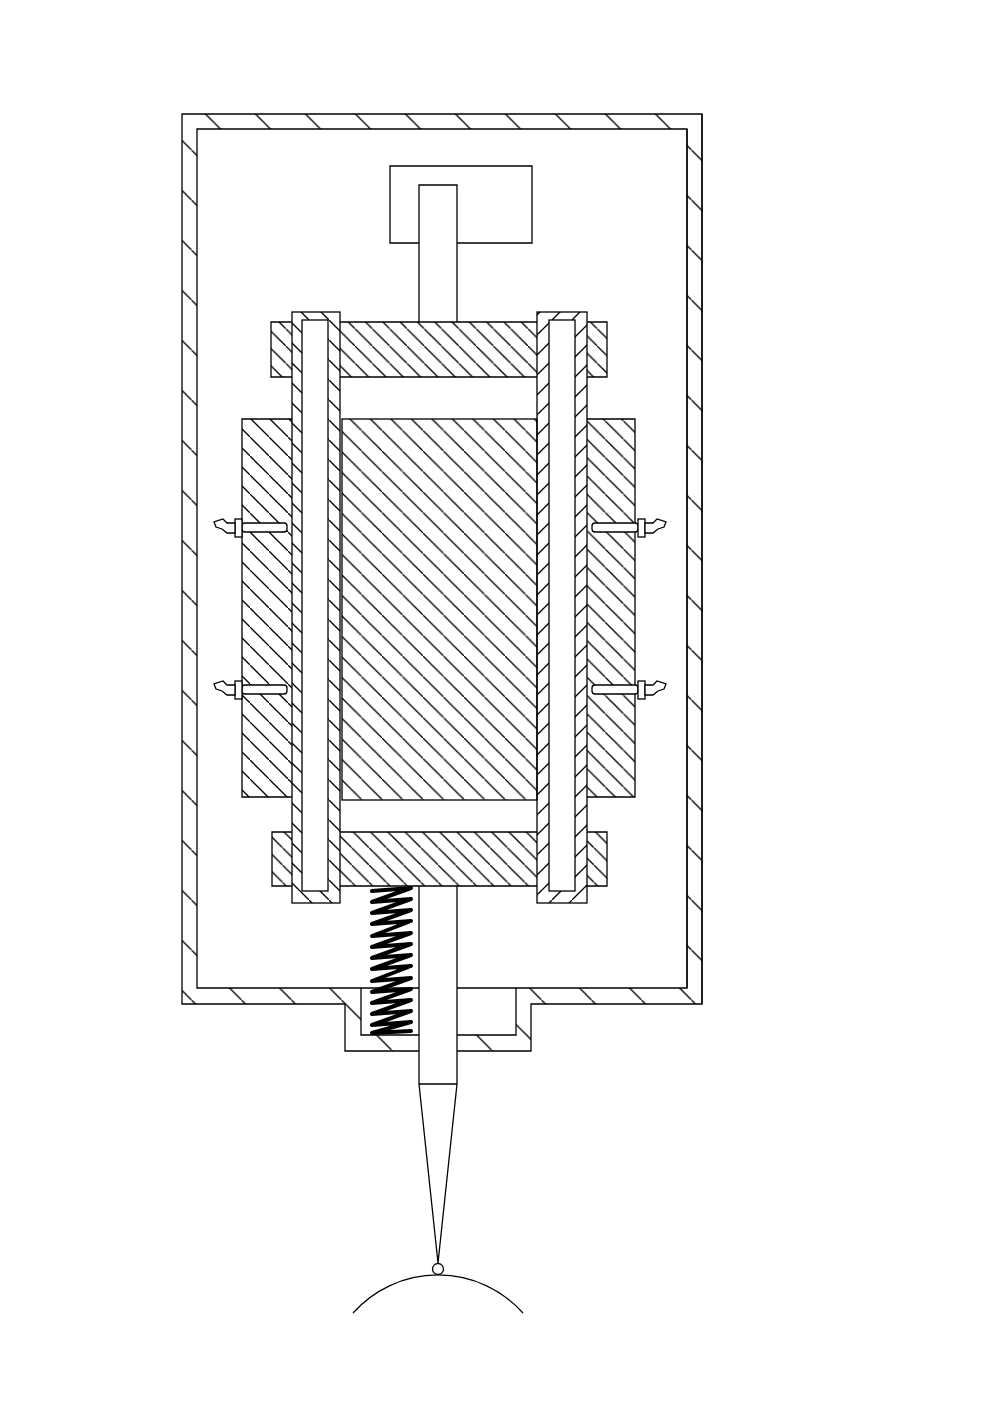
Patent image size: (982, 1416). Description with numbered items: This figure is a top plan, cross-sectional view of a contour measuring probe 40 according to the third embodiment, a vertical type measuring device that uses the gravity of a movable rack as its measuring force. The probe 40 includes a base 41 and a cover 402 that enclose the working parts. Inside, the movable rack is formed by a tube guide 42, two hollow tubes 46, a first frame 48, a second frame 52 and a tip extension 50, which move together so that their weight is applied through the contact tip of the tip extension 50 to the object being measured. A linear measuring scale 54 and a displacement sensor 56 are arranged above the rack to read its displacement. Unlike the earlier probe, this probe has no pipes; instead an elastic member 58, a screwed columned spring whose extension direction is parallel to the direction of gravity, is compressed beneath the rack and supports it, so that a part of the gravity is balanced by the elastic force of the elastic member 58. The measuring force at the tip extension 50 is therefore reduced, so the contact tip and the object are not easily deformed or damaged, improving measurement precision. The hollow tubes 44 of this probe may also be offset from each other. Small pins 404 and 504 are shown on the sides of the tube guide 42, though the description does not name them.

The contour measuring probe 40 is at (158, 62).
The base 41 is at (254, 152).
The cover 402 is at (697, 240).
The tube guide 42 is at (262, 453).
The hollow tubes 44 is at (292, 497).
The hollow tubes 46 is at (297, 582).
The first frame 48 is at (278, 860).
The tip extension 50 is at (437, 1043).
The second frame 52 is at (607, 347).
The linear measuring scale 54 is at (437, 207).
The displacement sensor 56 is at (518, 187).
The elastic member 58 is at (388, 1032).
The fixing pins 404 is at (250, 688).
The fixing pins 504 is at (635, 522).